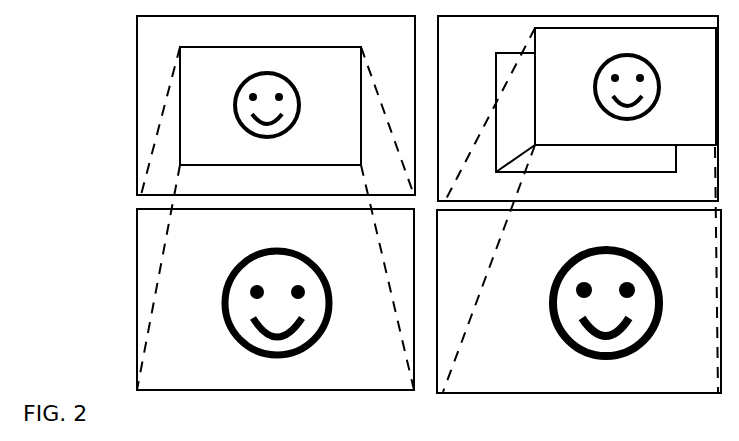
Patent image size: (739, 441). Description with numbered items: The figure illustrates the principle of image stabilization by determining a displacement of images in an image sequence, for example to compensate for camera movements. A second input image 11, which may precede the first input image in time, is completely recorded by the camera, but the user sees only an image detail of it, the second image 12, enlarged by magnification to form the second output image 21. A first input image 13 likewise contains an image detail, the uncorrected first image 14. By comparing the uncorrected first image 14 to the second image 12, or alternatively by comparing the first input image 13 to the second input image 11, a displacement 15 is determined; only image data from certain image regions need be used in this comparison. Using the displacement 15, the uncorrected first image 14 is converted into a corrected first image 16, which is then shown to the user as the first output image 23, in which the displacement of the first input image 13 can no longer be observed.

The second input image 11 is at (276, 105).
The second image 12 is at (270, 106).
The first input image 13 is at (578, 108).
The uncorrected first image 14 is at (496, 68).
The displacement 15 is at (524, 149).
The corrected first image 16 is at (625, 86).
The second output image 21 is at (275, 299).
The first output image 23 is at (579, 301).